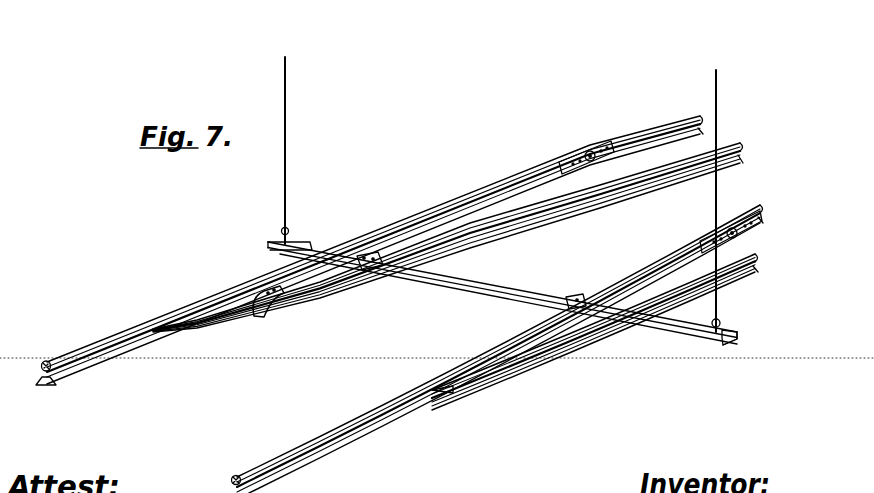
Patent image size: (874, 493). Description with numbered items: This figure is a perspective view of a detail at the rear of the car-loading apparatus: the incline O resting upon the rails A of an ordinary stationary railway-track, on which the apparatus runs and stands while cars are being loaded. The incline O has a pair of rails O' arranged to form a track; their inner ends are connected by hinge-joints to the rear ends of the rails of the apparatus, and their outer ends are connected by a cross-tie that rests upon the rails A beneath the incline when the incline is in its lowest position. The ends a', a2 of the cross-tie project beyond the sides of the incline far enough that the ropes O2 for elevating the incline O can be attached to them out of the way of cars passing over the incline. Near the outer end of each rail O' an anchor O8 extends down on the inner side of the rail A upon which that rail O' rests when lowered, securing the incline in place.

The rails of a stationary railway-track A is at (126, 339).
The incline O is at (502, 293).
The incline rails O' is at (455, 276).
The ropes O2 is at (715, 68).
The anchor O8 is at (262, 317).
The cross-tie end a' is at (270, 250).
The cross-tie end a2 is at (713, 347).